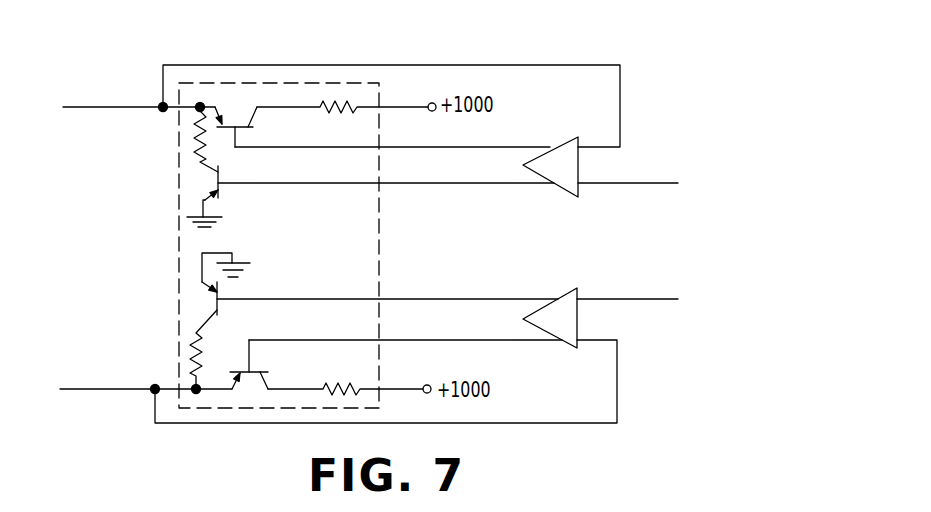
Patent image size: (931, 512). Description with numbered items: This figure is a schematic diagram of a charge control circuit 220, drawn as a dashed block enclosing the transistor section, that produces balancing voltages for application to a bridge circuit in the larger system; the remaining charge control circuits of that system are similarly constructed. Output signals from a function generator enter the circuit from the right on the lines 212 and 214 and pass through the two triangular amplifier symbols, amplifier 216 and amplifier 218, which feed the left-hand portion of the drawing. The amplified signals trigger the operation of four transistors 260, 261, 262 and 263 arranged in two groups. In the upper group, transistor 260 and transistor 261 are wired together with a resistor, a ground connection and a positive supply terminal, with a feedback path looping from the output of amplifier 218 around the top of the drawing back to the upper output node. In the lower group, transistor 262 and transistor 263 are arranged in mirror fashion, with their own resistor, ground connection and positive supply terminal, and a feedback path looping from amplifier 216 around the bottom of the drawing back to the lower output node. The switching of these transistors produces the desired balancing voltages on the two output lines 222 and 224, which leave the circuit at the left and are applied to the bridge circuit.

The amplifier 212 is at (625, 300).
The input line to amplifier 218 214 is at (643, 186).
The amplifier 216 is at (562, 349).
The amplifier 218 is at (563, 140).
The charge control circuit 220 is at (380, 242).
The output line 222 is at (104, 105).
The output line 224 is at (96, 394).
The transistor 260 is at (255, 116).
The transistor 261 is at (220, 173).
The transistor 262 is at (218, 293).
The transistor 263 is at (250, 382).